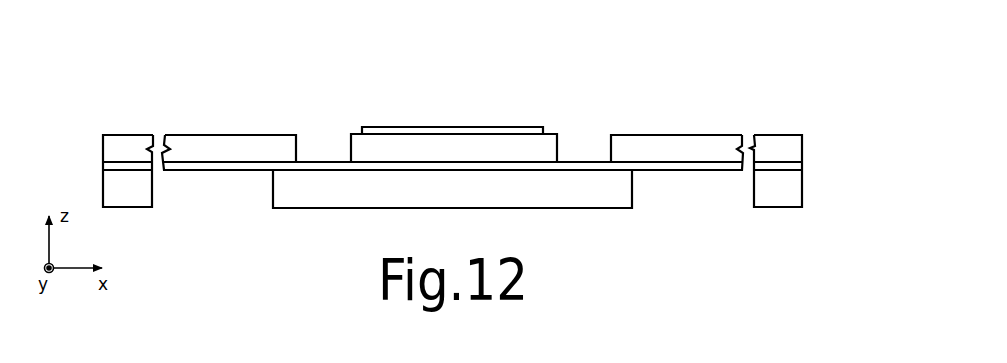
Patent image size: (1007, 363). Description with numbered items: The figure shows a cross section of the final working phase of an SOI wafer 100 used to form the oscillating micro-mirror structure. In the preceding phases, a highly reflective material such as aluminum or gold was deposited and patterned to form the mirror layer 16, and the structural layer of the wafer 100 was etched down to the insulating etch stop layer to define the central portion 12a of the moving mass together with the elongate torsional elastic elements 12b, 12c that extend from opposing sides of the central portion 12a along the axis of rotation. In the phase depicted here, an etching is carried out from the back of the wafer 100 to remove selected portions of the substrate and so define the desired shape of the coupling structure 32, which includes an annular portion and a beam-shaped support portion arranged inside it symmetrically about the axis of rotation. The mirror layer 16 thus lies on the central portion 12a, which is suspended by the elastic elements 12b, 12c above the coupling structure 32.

The wafer 100 is at (138, 103).
The central portion 12a is at (412, 150).
The elastic element 12b is at (243, 150).
The elastic element 12c is at (653, 147).
The mirror layer 16 is at (530, 130).
The coupling structure 32 is at (368, 210).